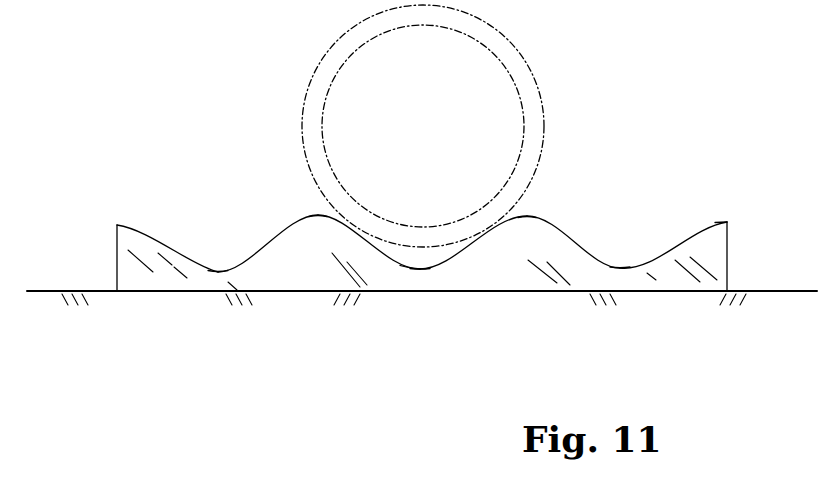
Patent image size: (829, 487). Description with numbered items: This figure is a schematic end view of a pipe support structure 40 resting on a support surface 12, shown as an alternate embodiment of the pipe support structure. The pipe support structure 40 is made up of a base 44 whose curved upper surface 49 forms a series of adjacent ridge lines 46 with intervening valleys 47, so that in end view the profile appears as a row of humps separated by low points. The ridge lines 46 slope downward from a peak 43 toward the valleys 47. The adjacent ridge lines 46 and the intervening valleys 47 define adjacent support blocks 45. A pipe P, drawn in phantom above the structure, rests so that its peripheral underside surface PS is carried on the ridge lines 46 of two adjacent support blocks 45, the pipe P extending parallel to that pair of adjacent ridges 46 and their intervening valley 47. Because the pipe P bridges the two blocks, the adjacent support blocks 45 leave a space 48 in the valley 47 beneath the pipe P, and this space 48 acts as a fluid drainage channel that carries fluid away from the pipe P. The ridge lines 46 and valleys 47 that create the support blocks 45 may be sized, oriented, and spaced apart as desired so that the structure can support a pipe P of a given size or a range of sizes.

The pipe support structure 40 is at (447, 212).
The support surface 12 is at (103, 291).
The peak 43 is at (320, 215).
The base 44 is at (718, 260).
The support block 45 is at (307, 243).
The ridge line 46 is at (289, 232).
The valley 47 is at (218, 273).
The space 48 is at (418, 255).
The curved upper surface 49 is at (172, 247).
The pipe P is at (440, 209).
The peripheral underside surface PS is at (405, 248).